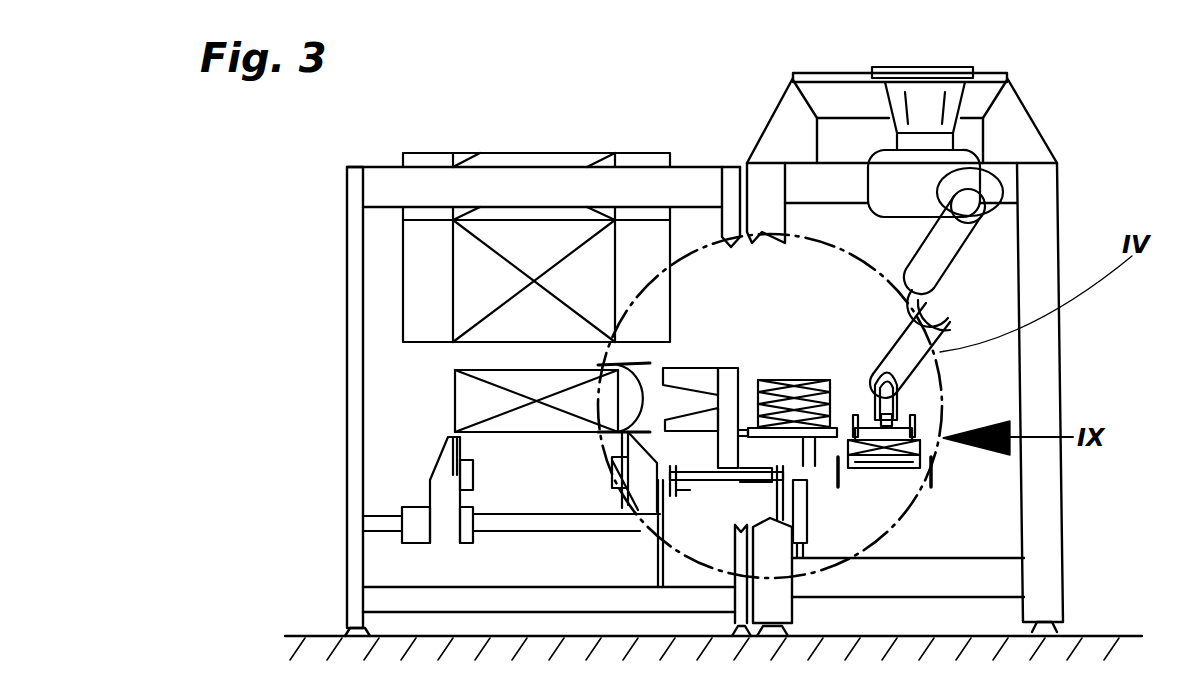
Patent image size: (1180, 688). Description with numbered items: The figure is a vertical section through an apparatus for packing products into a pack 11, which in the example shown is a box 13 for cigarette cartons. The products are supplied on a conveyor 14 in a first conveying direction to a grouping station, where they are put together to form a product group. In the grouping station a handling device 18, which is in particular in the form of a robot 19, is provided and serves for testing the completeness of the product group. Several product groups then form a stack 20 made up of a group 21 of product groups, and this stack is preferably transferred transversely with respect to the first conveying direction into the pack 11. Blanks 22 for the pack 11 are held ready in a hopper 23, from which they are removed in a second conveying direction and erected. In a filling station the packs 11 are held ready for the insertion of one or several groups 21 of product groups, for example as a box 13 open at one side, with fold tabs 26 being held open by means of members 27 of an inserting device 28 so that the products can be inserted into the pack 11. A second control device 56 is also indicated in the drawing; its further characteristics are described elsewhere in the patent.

The pack 11 is at (444, 456).
The box 13 is at (483, 403).
The conveyor 14 is at (885, 472).
The handling device 18 is at (1018, 243).
The robot 19 is at (900, 183).
The stack 20 is at (806, 381).
The group 21 is at (804, 378).
The blanks 22 is at (535, 237).
The hopper 23 is at (594, 145).
The fold tabs 26 is at (628, 397).
The members 27 is at (692, 423).
The inserting device 28 is at (742, 361).
The control device 56 is at (808, 450).